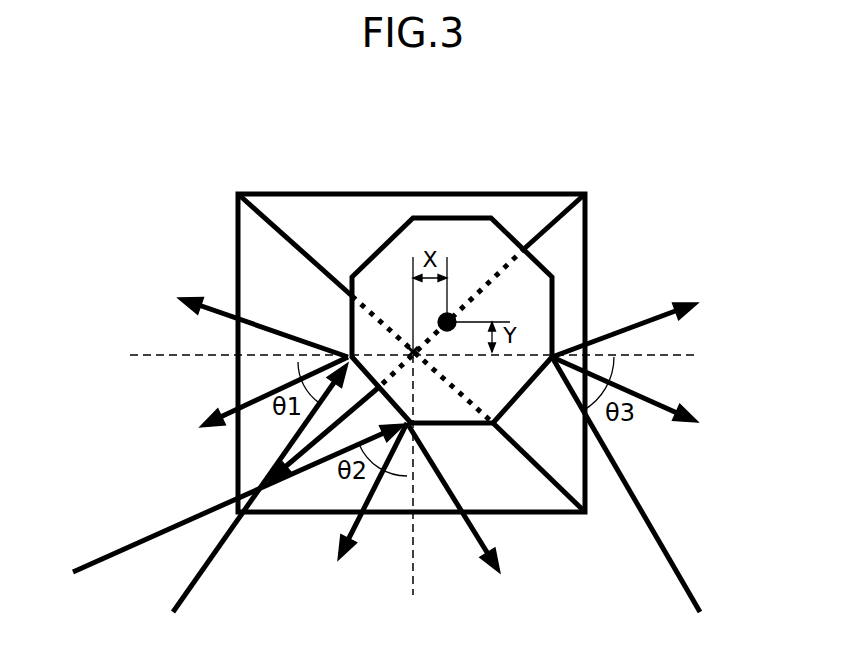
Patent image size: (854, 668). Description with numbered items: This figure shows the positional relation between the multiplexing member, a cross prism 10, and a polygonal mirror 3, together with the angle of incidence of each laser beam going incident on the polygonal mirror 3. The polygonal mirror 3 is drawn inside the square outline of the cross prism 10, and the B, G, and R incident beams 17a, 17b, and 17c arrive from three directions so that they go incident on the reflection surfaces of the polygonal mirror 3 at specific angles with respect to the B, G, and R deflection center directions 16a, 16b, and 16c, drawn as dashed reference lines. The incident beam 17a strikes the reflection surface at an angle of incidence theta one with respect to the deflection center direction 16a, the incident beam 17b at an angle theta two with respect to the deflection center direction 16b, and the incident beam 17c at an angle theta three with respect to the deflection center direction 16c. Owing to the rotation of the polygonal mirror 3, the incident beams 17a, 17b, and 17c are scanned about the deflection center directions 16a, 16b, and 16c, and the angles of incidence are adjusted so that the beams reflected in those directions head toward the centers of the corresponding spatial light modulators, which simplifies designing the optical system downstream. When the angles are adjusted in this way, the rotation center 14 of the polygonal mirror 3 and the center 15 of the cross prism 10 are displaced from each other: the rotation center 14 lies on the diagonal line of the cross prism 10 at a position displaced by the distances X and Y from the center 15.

The cross prism 10 is at (342, 233).
The polygonal mirror 3 is at (514, 237).
The rotation center 14 is at (452, 312).
The center 15 is at (400, 347).
The deflection center direction 16a is at (172, 357).
The deflection center direction 16b is at (410, 580).
The deflection center direction 16c is at (680, 355).
The incident beam 17a is at (213, 578).
The incident beam 17b is at (130, 550).
The incident beam 17c is at (655, 532).